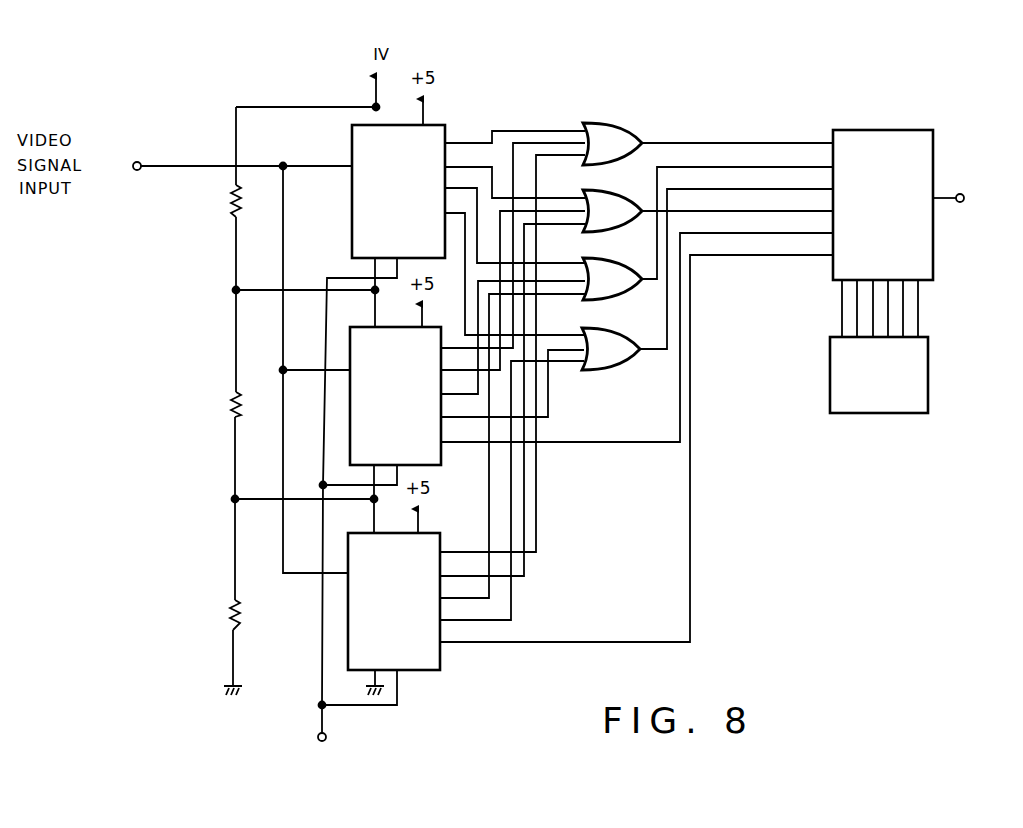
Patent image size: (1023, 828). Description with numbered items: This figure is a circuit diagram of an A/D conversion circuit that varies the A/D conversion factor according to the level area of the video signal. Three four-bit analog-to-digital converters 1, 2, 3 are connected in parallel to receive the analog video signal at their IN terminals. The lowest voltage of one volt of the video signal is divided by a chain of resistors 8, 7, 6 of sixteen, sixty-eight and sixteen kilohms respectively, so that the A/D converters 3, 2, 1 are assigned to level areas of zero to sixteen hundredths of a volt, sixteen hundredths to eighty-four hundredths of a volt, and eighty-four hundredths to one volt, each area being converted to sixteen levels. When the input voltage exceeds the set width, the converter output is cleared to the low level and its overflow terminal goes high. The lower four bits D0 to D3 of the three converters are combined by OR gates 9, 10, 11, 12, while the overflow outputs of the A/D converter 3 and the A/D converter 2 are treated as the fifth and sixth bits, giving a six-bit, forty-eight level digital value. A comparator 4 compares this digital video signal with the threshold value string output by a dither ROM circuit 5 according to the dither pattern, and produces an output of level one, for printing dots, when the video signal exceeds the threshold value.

The 4-bit analog-to-digital converter 1 is at (436, 122).
The 4-bit analog-to-digital converter 2 is at (350, 418).
The 4-bit analog-to-digital converter 3 is at (350, 636).
The comparator 4 is at (881, 131).
The dither ROM circuit 5 is at (882, 415).
The resistor 6 is at (241, 201).
The resistor 7 is at (241, 406).
The resistor 8 is at (241, 607).
The OR gate 9 is at (618, 122).
The OR gate 10 is at (607, 190).
The OR gate 11 is at (608, 258).
The OR gate 12 is at (609, 330).